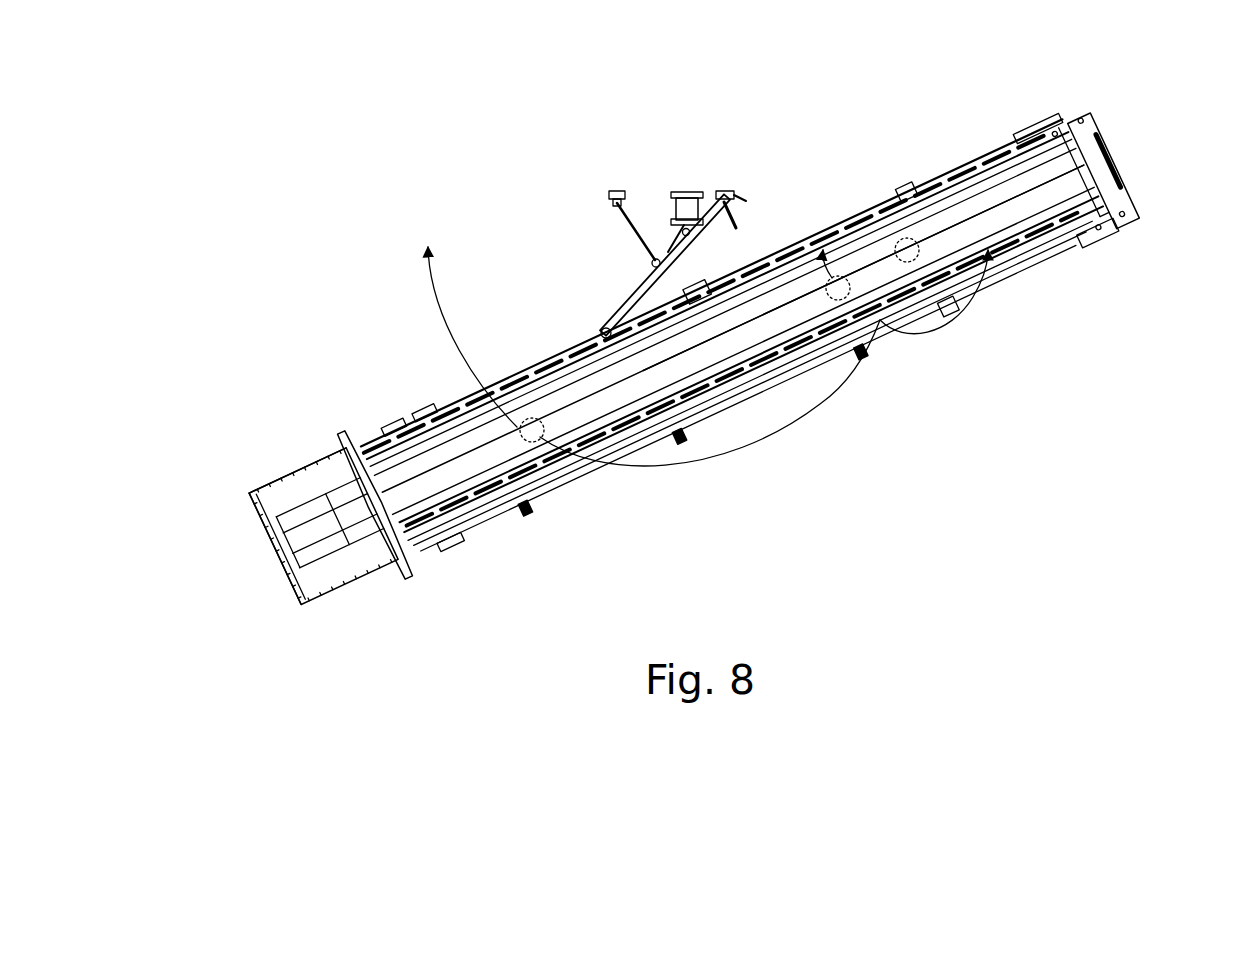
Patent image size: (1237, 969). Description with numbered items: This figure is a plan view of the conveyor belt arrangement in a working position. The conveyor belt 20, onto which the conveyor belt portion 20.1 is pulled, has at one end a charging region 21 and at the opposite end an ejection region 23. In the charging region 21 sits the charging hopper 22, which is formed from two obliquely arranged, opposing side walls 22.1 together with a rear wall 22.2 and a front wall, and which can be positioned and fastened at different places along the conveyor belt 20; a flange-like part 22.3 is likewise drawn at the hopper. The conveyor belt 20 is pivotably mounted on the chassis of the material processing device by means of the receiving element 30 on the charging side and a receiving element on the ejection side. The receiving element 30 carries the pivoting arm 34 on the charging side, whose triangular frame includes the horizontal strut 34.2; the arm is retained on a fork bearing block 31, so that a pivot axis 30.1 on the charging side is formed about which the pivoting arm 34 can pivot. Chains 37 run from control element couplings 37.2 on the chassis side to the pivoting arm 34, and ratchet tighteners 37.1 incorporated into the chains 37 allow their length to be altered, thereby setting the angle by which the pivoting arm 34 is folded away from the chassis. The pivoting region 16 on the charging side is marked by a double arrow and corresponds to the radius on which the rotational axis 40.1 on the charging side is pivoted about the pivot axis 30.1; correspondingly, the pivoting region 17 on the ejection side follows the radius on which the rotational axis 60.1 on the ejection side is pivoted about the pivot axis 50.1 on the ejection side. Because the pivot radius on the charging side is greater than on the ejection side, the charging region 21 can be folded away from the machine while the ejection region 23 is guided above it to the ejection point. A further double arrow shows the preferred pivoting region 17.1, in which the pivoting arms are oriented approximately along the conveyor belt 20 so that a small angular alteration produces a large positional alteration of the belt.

The pivoting region on the charging side 16 is at (752, 301).
The pivoting region on the ejection side 17 is at (927, 326).
The preferred pivoting region 17.1 is at (888, 250).
The conveyor belt 20 is at (388, 268).
The conveyor belt portion 20.1 is at (1045, 192).
The charging region 21 is at (289, 504).
The charging hopper 22 is at (281, 543).
The side walls 22.1 is at (288, 495).
The rear wall 22.2 is at (283, 552).
The hopper flange 22.3 is at (348, 437).
The ejection region 23 is at (1123, 152).
The receiving element on the charging side 30 is at (661, 206).
The pivot axis on the charging side 30.1 is at (753, 195).
The fork bearing block 31 is at (680, 195).
The pivoting arm on the charging side 34 is at (601, 266).
The horizontal strut 34.2 is at (617, 295).
The chain 37 is at (640, 240).
The ratchet tightener 37.1 is at (622, 213).
The control element coupling on the chassis side 37.2 is at (622, 190).
The rotational axis on the charging side 40.1 is at (520, 430).
The pivot axis on the ejection side 50.1 is at (905, 247).
The rotational axis on the ejection side 60.1 is at (843, 283).